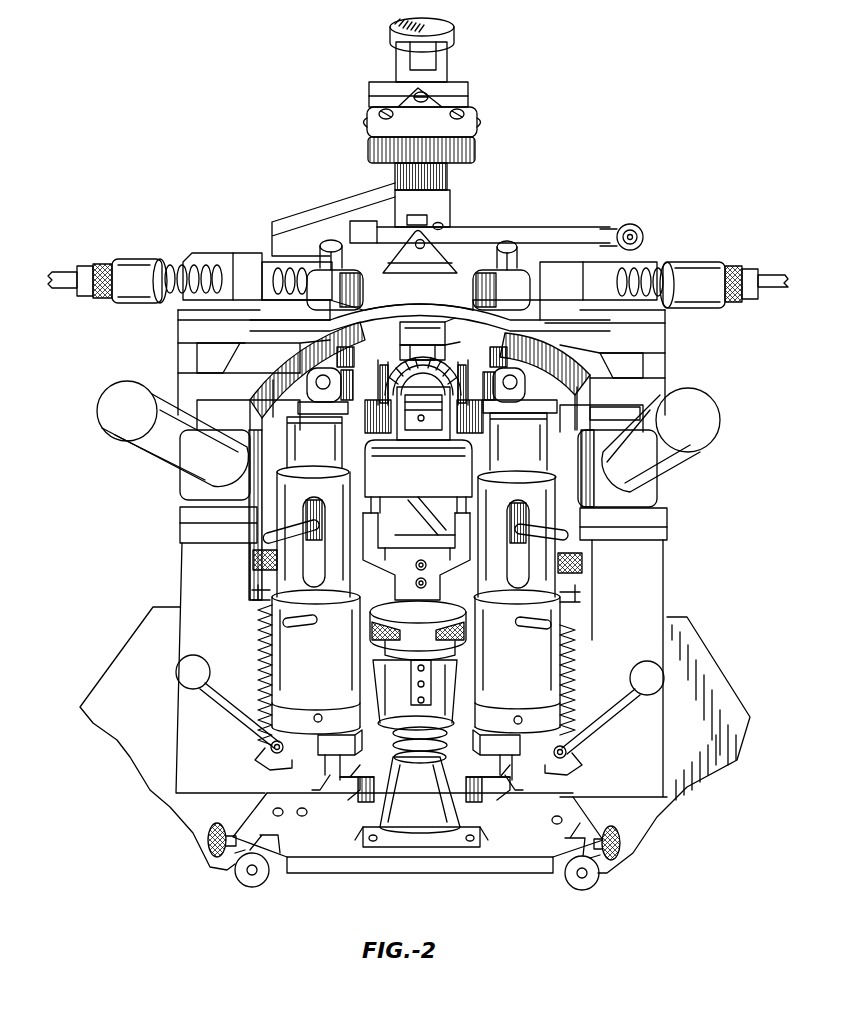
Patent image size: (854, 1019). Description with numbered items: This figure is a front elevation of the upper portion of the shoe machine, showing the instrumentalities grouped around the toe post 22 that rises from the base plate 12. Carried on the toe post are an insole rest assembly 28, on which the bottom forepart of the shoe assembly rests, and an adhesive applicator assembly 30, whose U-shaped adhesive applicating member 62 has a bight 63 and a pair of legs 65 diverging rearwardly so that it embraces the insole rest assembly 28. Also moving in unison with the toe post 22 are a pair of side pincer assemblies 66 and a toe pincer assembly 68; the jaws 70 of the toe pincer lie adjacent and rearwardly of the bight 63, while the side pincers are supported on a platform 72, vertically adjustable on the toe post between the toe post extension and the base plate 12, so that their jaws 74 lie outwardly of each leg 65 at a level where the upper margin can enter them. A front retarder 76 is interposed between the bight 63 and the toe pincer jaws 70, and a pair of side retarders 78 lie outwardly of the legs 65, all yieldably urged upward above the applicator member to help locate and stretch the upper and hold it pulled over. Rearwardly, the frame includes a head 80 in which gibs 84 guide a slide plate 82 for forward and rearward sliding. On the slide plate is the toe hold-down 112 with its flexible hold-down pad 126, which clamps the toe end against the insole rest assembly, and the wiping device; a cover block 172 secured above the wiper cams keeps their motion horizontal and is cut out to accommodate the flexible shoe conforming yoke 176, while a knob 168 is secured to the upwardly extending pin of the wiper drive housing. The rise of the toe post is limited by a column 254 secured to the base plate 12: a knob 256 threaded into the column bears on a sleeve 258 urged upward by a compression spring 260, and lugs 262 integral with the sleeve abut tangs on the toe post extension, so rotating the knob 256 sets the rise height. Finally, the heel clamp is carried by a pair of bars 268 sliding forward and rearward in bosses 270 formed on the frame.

The base plate 12 is at (473, 867).
The toe post 22 is at (447, 740).
The insole rest assembly 28 is at (440, 437).
The adhesive applicator assembly 30 is at (424, 350).
The adhesive applicating member 62 is at (462, 412).
The bight 63 is at (398, 354).
The legs 65 is at (443, 359).
The side pincer assemblies 66 is at (283, 440).
The toe pincer assembly 68 is at (415, 320).
The jaws 70 is at (405, 339).
The platform 72 is at (507, 777).
The jaws 74 is at (275, 351).
The front retarder 76 is at (461, 331).
The side retarders 78 is at (421, 484).
The head 80 is at (183, 358).
The slide plate 82 is at (190, 329).
The gibs 84 is at (207, 362).
The toe hold-down 112 is at (478, 83).
The hold-down pad 126 is at (470, 151).
The knob 168 is at (393, 33).
The cover block 172 is at (236, 282).
The yoke 176 is at (452, 233).
The column 254 is at (407, 793).
The knob 256 is at (445, 618).
The sleeve 258 is at (353, 681).
The compression spring 260 is at (397, 737).
The lugs 262 is at (373, 586).
The bars 268 is at (163, 448).
The bosses 270 is at (195, 490).